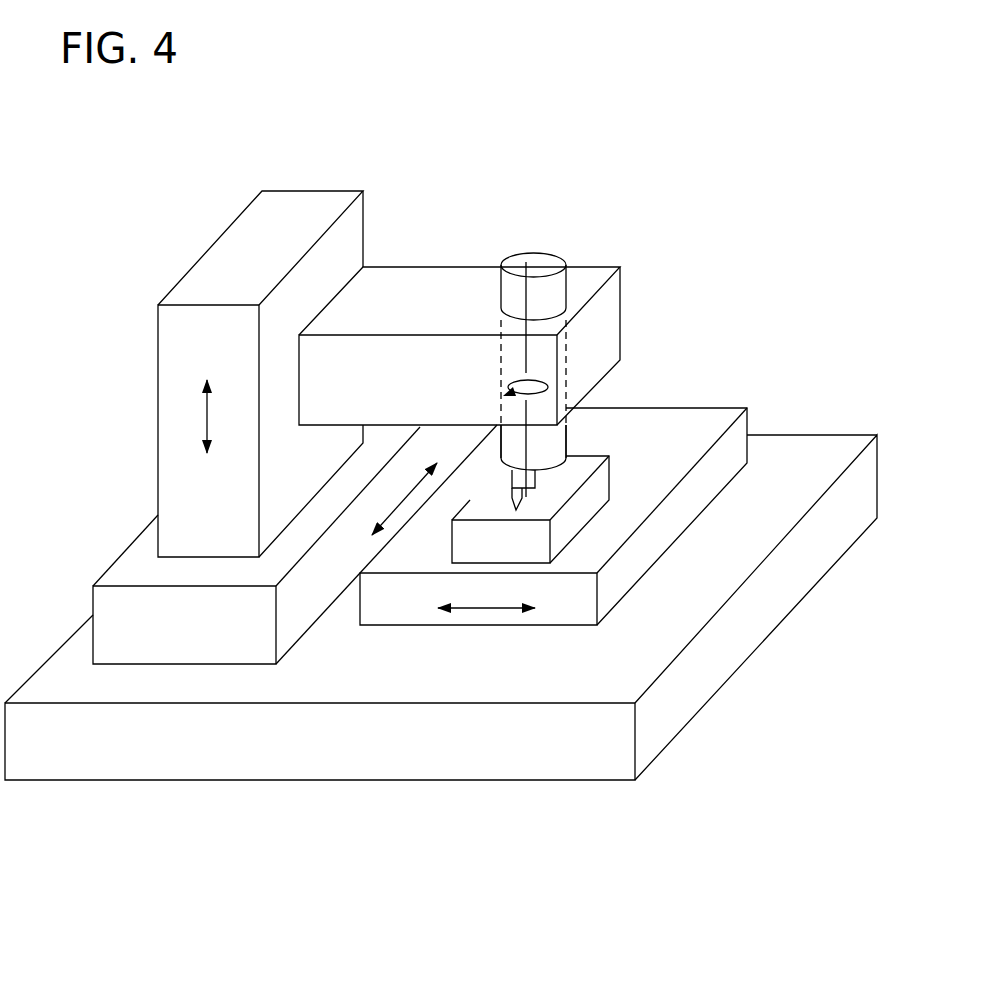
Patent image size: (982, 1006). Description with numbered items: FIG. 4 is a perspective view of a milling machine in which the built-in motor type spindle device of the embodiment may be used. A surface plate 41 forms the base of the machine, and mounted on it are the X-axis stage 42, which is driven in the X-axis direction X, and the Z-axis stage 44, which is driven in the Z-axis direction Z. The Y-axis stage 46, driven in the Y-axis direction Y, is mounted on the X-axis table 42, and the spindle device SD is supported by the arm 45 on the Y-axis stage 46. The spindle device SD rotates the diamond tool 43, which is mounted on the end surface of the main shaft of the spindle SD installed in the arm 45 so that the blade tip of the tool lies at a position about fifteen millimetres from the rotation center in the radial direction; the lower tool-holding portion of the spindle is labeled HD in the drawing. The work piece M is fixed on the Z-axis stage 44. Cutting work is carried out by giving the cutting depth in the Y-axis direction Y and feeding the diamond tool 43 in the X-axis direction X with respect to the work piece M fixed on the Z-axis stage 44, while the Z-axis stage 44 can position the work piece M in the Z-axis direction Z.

The surface plate 41 is at (392, 755).
The X-axis stage 42 is at (107, 600).
The diamond tool 43 is at (523, 500).
The Z-axis stage 44 is at (702, 418).
The arm 45 is at (413, 277).
The Y-axis stage 46 is at (158, 403).
The spindle device SD is at (556, 294).
The work piece M is at (583, 455).
The tool holder HD is at (507, 443).
The X-axis direction X is at (404, 499).
The Y-axis direction Y is at (195, 416).
The Z-axis direction Z is at (486, 597).